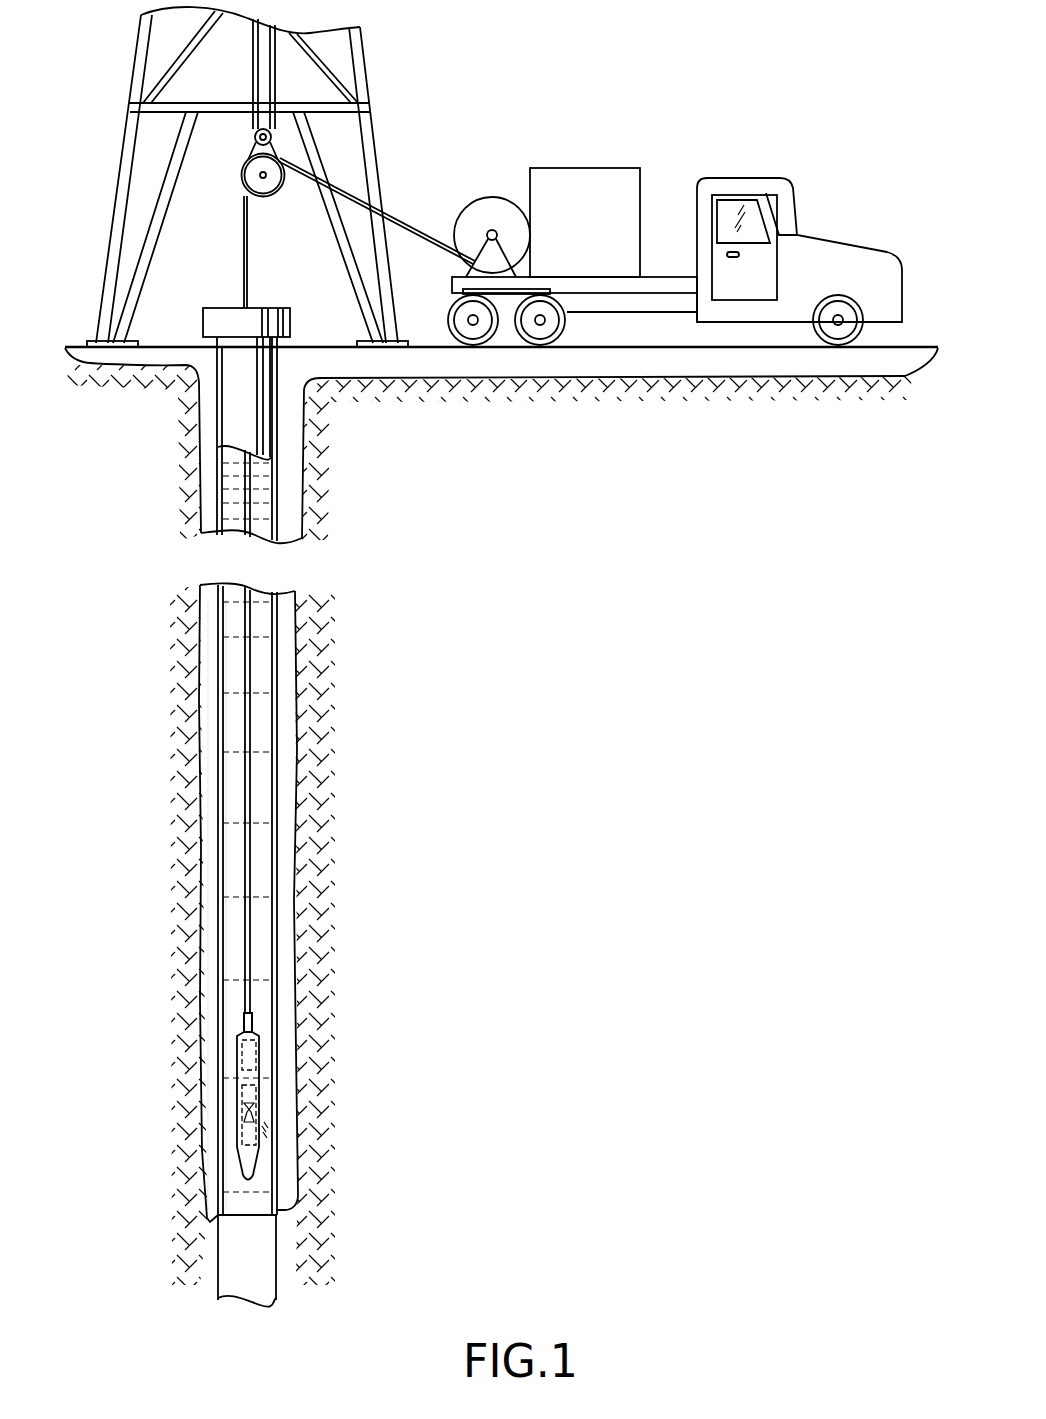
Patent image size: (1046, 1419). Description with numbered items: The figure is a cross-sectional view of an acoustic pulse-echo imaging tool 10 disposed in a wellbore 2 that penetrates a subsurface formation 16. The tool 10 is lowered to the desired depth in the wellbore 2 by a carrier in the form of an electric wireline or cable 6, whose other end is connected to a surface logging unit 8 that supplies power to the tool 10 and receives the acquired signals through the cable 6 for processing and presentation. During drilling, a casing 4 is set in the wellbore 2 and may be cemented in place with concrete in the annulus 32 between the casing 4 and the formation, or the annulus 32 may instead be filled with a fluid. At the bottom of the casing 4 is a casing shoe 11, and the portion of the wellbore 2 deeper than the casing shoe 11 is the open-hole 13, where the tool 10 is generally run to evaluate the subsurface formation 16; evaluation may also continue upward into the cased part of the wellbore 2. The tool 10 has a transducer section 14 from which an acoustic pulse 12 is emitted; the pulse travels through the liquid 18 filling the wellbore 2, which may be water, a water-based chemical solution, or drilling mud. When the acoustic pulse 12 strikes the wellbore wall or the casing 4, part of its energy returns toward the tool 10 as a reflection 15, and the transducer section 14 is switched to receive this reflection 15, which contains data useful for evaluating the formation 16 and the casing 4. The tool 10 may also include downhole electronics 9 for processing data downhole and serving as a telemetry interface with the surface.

The wellbore 2 is at (233, 845).
The casing 4 is at (220, 745).
The cable 6 is at (245, 668).
The surface logging unit 8 is at (593, 168).
The downhole electronics 9 is at (252, 1034).
The acoustic pulse-echo imaging tool 10 is at (226, 1045).
The casing shoe 11 is at (218, 1202).
The acoustic pulse 12 is at (268, 1130).
The open-hole 13 is at (240, 1240).
The transducer section 14 is at (242, 1128).
The reflection 15 is at (268, 1143).
The subsurface formation 16 is at (409, 861).
The liquid 18 is at (233, 915).
The annulus 32 is at (213, 970).